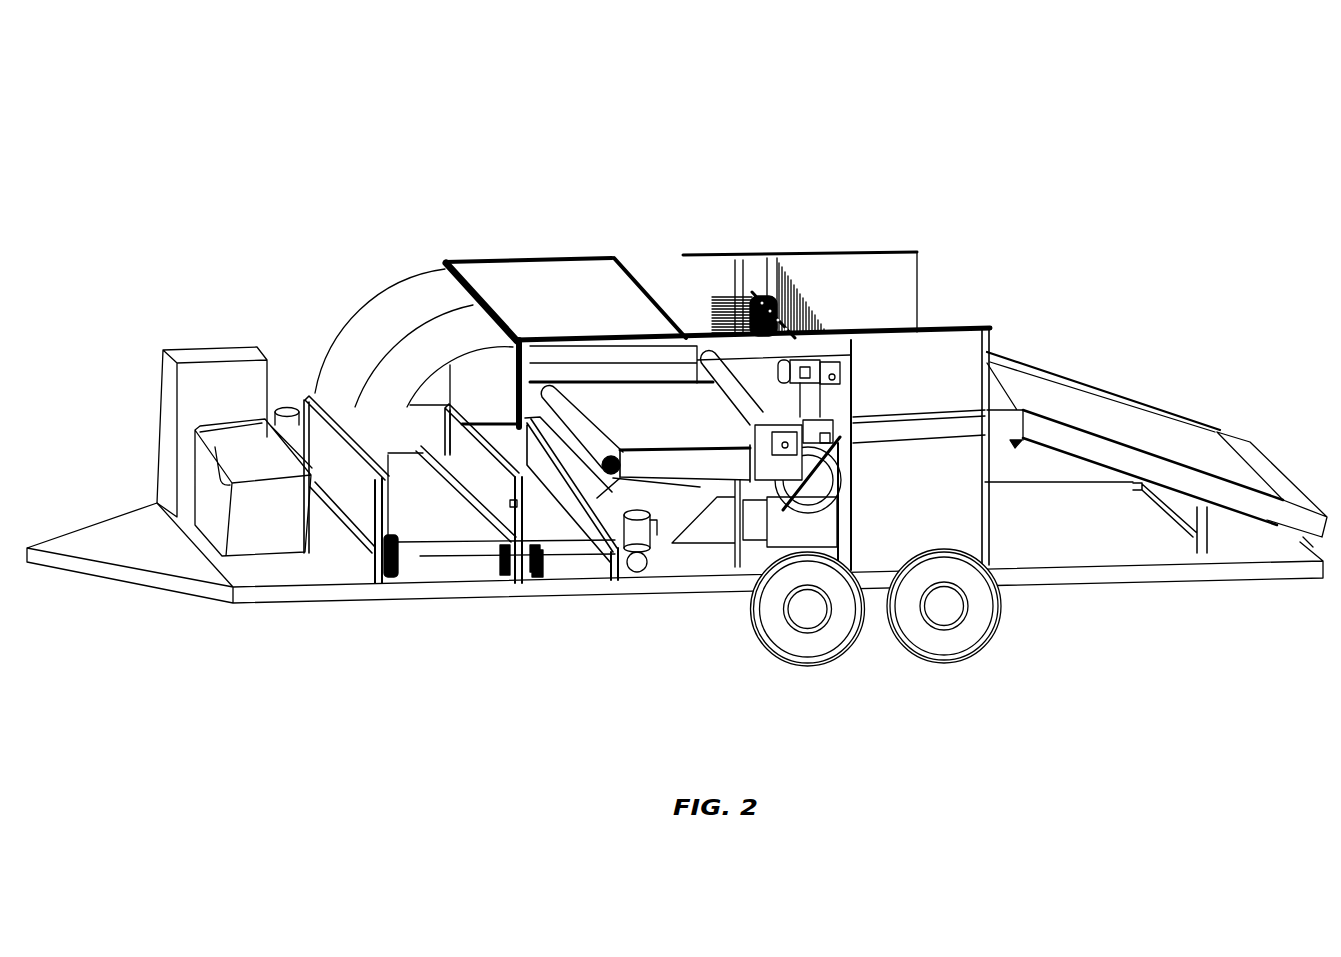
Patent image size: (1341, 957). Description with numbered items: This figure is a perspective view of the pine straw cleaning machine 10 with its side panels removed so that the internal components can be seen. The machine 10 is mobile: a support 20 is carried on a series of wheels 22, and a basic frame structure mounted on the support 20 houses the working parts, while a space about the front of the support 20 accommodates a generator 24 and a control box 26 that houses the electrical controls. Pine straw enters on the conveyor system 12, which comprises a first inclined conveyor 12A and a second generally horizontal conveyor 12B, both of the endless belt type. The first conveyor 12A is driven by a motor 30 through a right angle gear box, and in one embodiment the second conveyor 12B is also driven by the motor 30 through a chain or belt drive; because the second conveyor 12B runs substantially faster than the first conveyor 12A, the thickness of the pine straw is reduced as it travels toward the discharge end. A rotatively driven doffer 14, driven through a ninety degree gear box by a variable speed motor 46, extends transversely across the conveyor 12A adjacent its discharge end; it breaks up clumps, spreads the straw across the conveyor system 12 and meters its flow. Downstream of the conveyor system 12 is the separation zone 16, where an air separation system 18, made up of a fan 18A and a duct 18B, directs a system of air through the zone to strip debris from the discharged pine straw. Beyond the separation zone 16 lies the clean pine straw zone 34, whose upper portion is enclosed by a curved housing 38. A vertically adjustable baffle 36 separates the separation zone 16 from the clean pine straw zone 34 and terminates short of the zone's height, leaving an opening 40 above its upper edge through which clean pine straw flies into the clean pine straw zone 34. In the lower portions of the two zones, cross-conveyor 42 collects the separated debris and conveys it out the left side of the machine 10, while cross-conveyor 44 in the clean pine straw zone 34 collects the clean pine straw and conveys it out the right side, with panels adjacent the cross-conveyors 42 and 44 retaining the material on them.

The pine straw cleaning machine 10 is at (362, 162).
The conveyor system 12 is at (1013, 314).
The first inclined conveyor 12A is at (1098, 417).
The second generally horizontal conveyor 12B is at (680, 420).
The doffer 14 is at (838, 280).
The separation zone 16 is at (545, 504).
The air separation system 18 is at (775, 538).
The fan 18A is at (857, 503).
The duct 18B is at (717, 520).
The support 20 is at (1153, 573).
The wheels 22 is at (815, 650).
The generator 24 is at (243, 500).
The control box 26 is at (228, 382).
The motor 30 is at (840, 440).
The clean pine straw zone 34 is at (432, 498).
The baffle 36 is at (480, 448).
The curved housing 38 is at (375, 323).
The opening 40 is at (458, 445).
The cross-conveyor 42 is at (572, 533).
The cross-conveyor 44 is at (413, 523).
The variable speed motor 46 is at (753, 293).